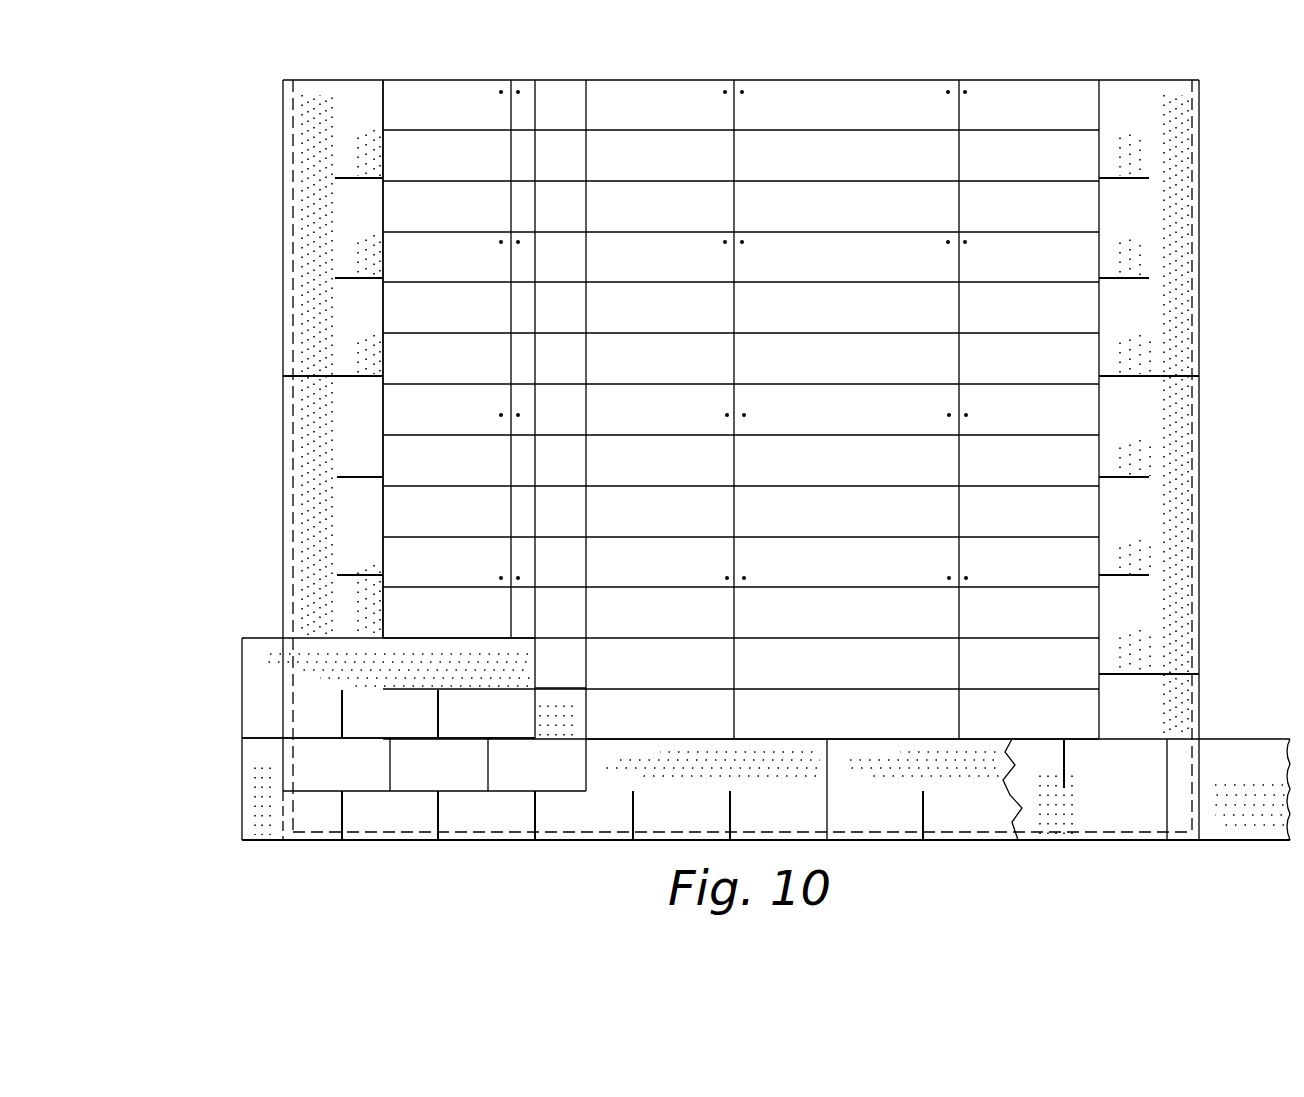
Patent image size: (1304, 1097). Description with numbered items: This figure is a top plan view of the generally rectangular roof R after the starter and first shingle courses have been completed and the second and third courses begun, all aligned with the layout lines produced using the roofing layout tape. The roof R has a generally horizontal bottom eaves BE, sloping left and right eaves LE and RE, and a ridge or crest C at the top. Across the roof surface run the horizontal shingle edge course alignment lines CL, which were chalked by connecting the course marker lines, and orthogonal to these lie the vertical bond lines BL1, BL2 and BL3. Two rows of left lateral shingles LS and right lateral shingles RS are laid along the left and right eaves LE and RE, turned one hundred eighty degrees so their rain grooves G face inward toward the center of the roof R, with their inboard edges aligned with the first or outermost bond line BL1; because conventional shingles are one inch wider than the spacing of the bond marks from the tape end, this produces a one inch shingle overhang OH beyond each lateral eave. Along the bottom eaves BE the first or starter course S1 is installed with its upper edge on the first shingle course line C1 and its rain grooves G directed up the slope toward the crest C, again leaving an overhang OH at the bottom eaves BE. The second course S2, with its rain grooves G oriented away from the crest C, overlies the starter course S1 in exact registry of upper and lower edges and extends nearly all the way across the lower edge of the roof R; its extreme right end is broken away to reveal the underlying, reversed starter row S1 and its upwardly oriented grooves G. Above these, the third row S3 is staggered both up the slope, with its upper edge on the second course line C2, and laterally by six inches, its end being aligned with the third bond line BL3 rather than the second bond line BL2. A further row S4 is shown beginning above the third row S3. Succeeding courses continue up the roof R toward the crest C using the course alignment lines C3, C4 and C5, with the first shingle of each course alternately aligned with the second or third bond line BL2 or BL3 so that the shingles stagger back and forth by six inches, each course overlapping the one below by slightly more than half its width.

The roof crest C is at (758, 80).
The shingle edge course alignment lines CL is at (845, 282).
The first shingle course line C1 is at (759, 739).
The second horizontal course line C2 is at (811, 689).
The third course alignment line C3 is at (846, 638).
The fourth course alignment line C4 is at (888, 587).
The fifth course alignment line C5 is at (916, 537).
The first bond line BL1 is at (385, 421).
The second bond line BL2 is at (536, 356).
The third bond line BL3 is at (587, 470).
The left lateral shingles LS is at (302, 328).
The left eaves LE is at (293, 465).
The right lateral shingles RS is at (1180, 330).
The right eaves RE is at (1192, 481).
The shingle overhang OH is at (283, 536).
The first shingle course S1 is at (1180, 757).
The second course S2 is at (258, 796).
The third row S3 is at (305, 761).
The fourth stone S4 is at (258, 704).
The roof R is at (558, 878).
The bottom eaves BE is at (612, 843).
The rain grooves G is at (438, 708).